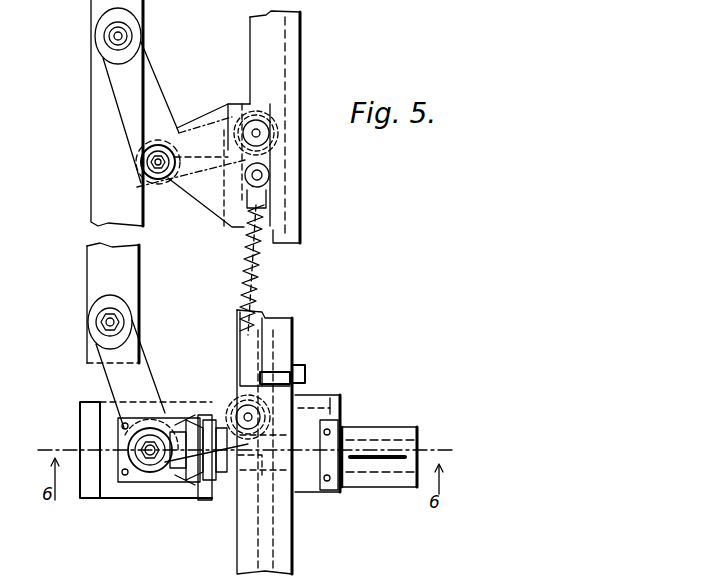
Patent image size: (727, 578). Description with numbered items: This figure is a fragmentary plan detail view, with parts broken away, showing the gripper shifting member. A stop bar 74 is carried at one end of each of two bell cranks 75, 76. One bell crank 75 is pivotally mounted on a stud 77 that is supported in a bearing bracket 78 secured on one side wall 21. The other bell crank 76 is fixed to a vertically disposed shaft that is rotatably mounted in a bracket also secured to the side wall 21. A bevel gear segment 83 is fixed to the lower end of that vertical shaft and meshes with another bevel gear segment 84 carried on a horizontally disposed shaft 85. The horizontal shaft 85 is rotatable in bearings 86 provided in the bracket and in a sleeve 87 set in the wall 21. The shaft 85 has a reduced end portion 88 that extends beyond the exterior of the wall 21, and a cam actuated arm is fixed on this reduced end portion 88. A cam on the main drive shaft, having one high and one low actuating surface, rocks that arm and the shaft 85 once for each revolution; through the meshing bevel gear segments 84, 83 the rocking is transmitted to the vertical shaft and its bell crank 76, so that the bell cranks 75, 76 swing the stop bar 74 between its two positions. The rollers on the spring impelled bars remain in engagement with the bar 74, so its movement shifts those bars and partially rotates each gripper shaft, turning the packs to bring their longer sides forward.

The side wall 21 is at (301, 188).
The stop bar 74 is at (89, 165).
The bell crank 75 is at (157, 82).
The bell crank 76 is at (152, 371).
The stud 77 is at (158, 166).
The bearing bracket 78 is at (211, 218).
The bevel gear segment 83 is at (196, 408).
The bevel gear segment 84 is at (195, 487).
The horizontally disposed shaft 85 is at (255, 473).
The bearings 86 is at (217, 408).
The sleeve 87 is at (340, 498).
The reduced end portion 88 is at (372, 443).